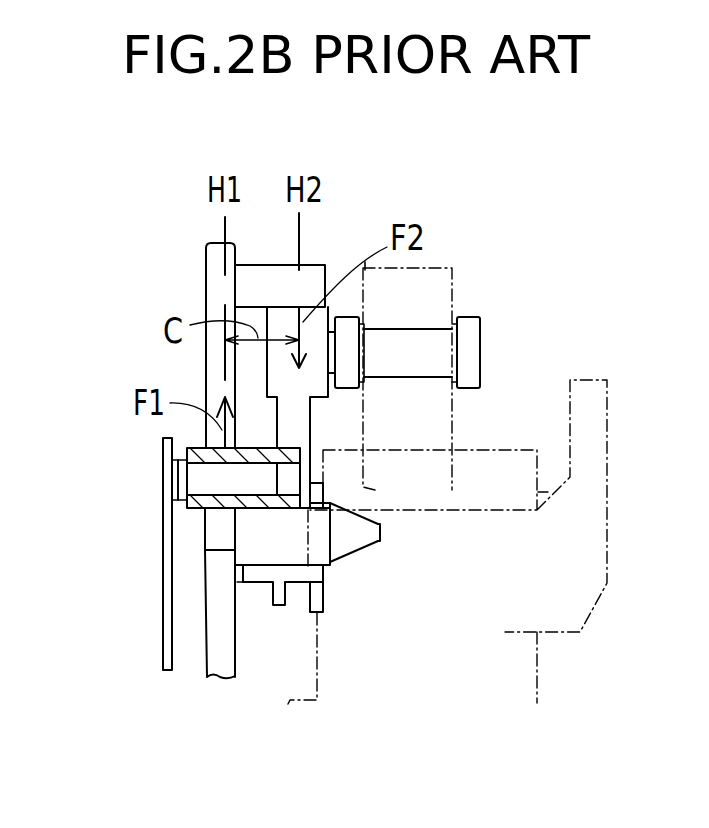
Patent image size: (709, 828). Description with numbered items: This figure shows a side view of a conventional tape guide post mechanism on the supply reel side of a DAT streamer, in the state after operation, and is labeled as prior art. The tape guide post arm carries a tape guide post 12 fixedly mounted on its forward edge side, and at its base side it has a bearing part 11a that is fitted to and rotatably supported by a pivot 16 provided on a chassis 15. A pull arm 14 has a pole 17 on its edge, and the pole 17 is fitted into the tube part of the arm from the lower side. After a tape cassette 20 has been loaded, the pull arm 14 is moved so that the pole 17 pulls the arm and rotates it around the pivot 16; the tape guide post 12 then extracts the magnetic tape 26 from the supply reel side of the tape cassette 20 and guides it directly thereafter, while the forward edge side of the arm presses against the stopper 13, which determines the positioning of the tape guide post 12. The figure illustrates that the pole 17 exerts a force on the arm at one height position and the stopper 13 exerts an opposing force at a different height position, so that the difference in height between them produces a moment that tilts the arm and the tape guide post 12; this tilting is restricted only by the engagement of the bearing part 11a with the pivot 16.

The bearing part 11a is at (318, 577).
The tape guide post 12 is at (432, 328).
The stopper 13 is at (308, 266).
The pull arm 14 is at (163, 648).
The chassis 15 is at (225, 672).
The pivot 16 is at (282, 540).
The pole 17 is at (202, 483).
The tape cassette 20 is at (530, 653).
The magnetic tape 26 is at (443, 408).